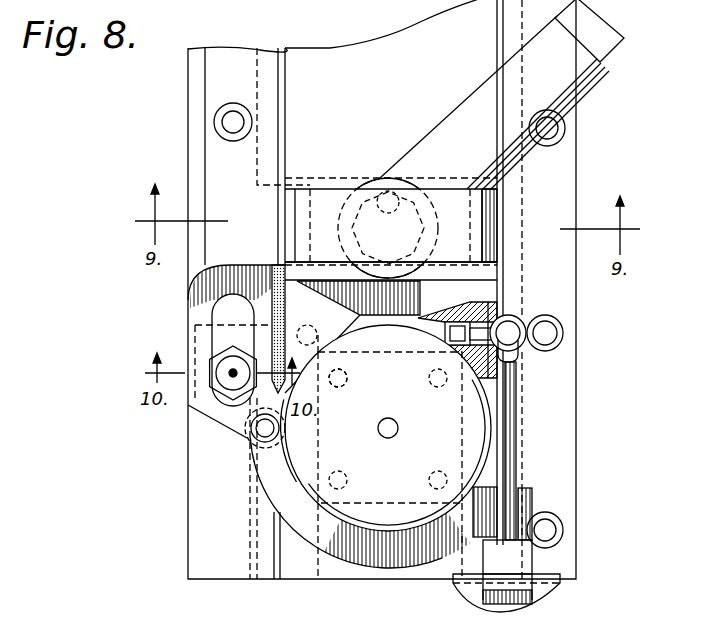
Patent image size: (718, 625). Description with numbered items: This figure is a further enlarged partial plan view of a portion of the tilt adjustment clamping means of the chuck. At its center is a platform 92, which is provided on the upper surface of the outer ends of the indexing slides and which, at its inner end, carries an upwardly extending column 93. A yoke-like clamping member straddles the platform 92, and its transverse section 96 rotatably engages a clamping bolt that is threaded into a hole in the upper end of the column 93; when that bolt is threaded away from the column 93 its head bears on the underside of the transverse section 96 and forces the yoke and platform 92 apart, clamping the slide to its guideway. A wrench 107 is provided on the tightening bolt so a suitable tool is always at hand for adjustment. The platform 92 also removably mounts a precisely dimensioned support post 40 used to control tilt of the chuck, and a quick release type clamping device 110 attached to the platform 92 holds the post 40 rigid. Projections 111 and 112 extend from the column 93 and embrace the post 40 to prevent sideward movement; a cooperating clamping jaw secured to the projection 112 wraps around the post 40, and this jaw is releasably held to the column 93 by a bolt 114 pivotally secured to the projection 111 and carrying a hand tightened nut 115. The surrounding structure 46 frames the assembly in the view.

The frame plate 46 is at (190, 120).
The transverse section 96 is at (330, 203).
The wrench 107 is at (576, 60).
The column 93 is at (482, 295).
The projection 111 is at (516, 365).
The bolt 114 is at (512, 410).
The quick release type clamping device 110 is at (530, 497).
The hand tightened nut 115 is at (510, 560).
The support post 40 is at (457, 443).
The projection 112 is at (300, 364).
The platform 92 is at (331, 572).